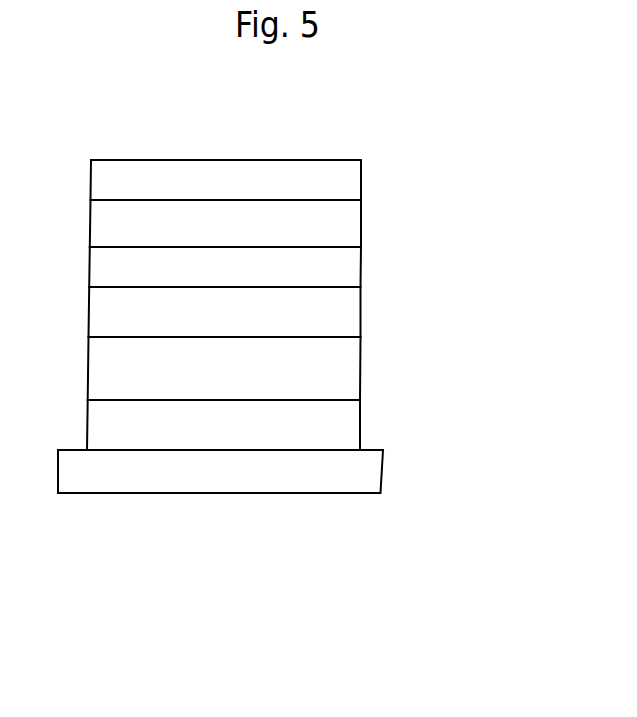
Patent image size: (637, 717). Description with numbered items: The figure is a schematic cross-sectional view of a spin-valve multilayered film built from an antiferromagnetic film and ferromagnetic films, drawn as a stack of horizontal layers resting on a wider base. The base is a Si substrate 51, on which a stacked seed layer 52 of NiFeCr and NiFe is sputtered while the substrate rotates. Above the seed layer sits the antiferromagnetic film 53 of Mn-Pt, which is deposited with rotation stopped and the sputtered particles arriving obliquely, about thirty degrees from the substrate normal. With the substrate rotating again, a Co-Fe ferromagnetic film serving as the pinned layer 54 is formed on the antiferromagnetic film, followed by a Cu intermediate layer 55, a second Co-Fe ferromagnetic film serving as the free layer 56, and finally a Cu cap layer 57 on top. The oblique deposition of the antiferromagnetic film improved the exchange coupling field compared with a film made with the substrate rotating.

The Si substrate 51 is at (332, 485).
The stacked seed layer 52 is at (330, 424).
The antiferromagnetic film 53 is at (333, 362).
The ferromagnetic film (pinned layer) 54 is at (348, 310).
The intermediate layer 55 is at (345, 263).
The ferromagnetic film (free layer) 56 is at (348, 223).
The cap layer 57 is at (352, 172).